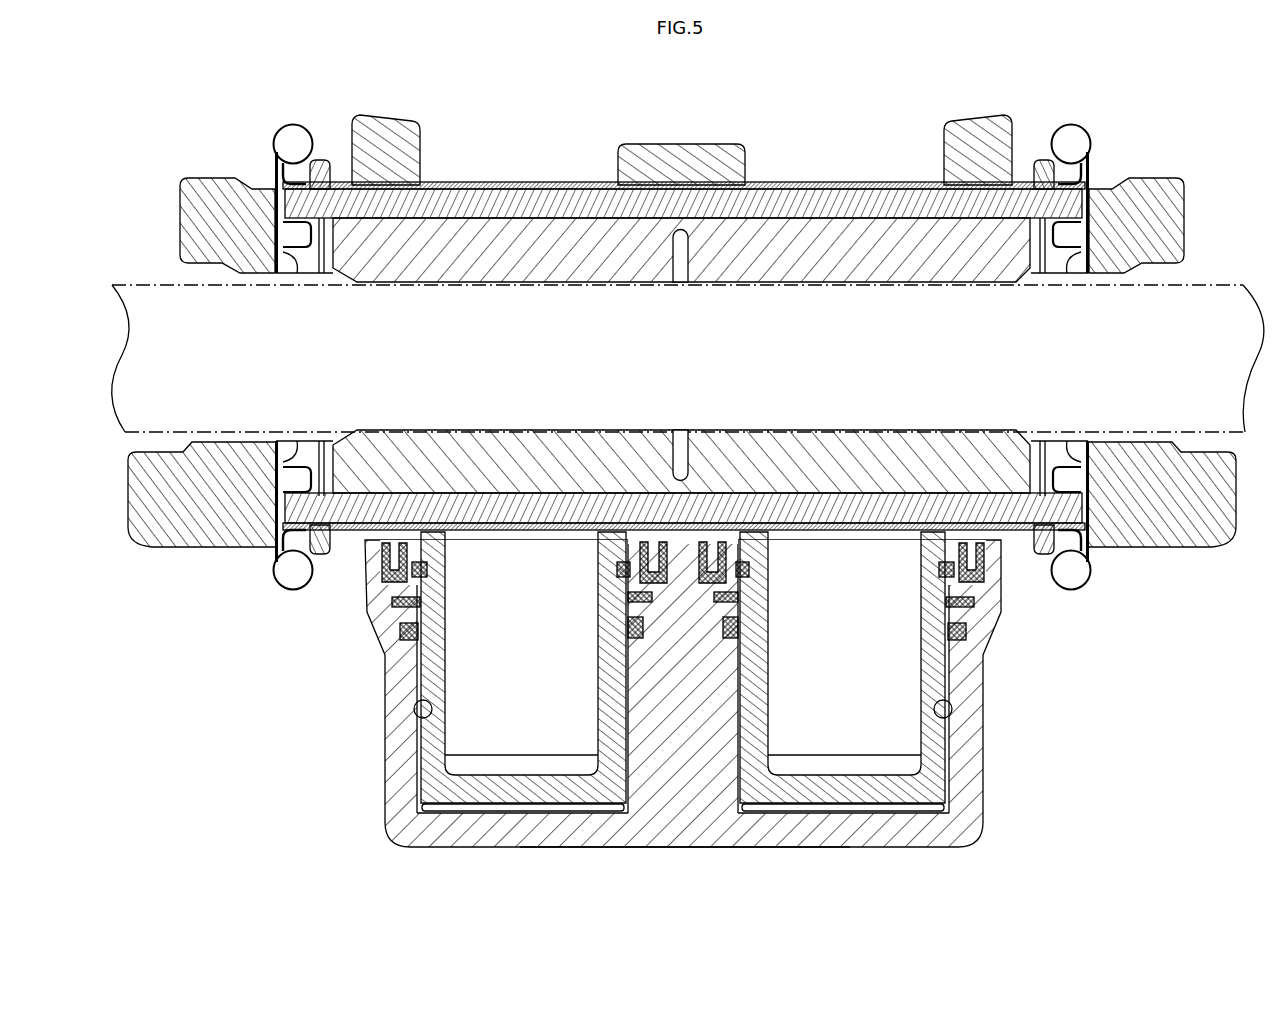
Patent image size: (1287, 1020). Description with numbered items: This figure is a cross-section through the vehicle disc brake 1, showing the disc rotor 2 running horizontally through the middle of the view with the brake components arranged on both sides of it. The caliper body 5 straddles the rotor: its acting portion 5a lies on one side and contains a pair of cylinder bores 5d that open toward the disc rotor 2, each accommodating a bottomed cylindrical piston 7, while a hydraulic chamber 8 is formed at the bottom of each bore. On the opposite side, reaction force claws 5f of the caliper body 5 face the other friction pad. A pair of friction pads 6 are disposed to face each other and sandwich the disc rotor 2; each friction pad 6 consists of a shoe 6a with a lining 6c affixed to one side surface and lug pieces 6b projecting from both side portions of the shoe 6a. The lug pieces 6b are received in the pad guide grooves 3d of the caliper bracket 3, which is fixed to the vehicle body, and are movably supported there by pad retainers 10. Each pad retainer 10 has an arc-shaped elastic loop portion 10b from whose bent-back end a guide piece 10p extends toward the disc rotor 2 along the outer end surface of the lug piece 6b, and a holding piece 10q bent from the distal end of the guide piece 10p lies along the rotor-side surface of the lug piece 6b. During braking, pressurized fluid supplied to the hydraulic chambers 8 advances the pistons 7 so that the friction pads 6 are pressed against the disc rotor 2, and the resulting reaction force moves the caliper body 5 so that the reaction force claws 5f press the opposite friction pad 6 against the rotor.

The vehicle disc brake 1 is at (686, 89).
The disc rotor 2 is at (1220, 284).
The caliper bracket 3 is at (1157, 168).
The pad guide groove 3d is at (290, 270).
The caliper body 5 is at (994, 778).
The acting portion 5a is at (688, 830).
The cylinder bore 5d is at (414, 709).
The reaction force claw 5f is at (392, 135).
The friction pad 6 is at (540, 140).
The shoe 6a is at (498, 202).
The lug piece 6b is at (318, 172).
The lining 6c is at (513, 240).
The piston 7 is at (437, 673).
The hydraulic chamber 8 is at (497, 812).
The pad retainer 10 is at (270, 128).
The elastic loop portion 10b is at (300, 124).
The guide piece 10p is at (284, 160).
The holding piece 10q is at (306, 242).